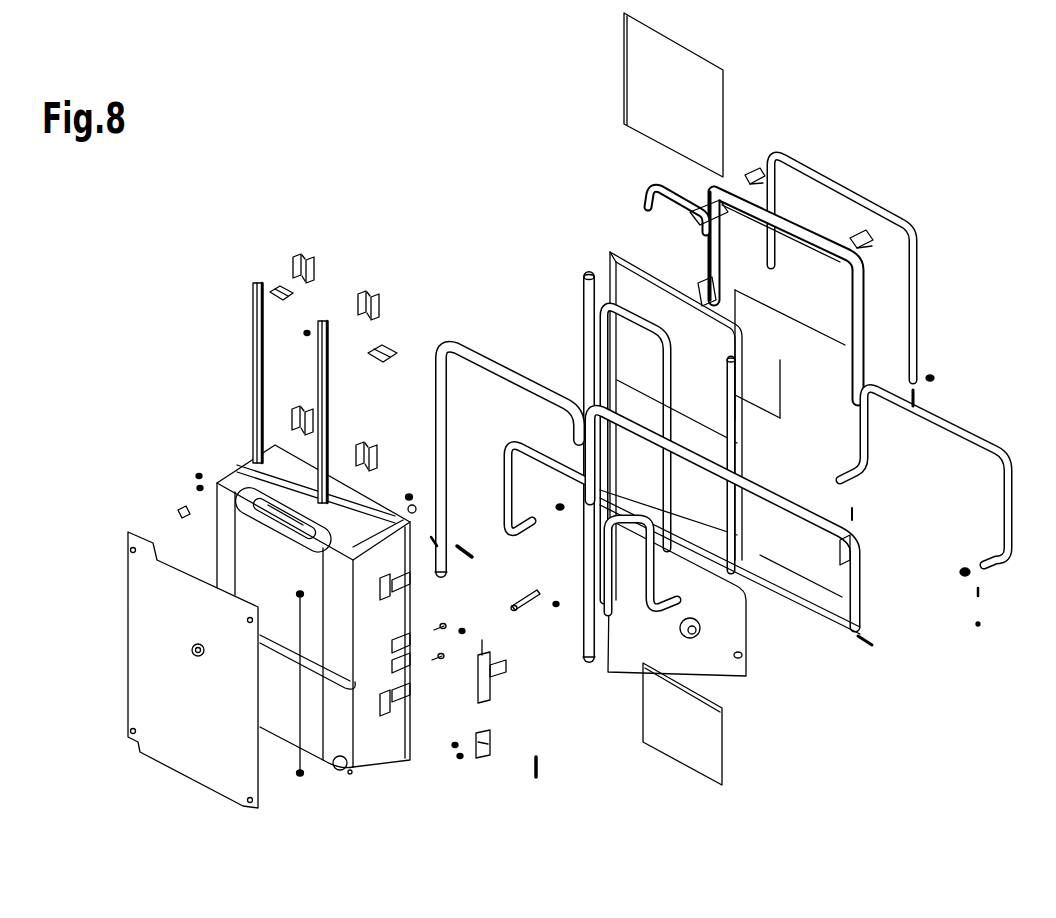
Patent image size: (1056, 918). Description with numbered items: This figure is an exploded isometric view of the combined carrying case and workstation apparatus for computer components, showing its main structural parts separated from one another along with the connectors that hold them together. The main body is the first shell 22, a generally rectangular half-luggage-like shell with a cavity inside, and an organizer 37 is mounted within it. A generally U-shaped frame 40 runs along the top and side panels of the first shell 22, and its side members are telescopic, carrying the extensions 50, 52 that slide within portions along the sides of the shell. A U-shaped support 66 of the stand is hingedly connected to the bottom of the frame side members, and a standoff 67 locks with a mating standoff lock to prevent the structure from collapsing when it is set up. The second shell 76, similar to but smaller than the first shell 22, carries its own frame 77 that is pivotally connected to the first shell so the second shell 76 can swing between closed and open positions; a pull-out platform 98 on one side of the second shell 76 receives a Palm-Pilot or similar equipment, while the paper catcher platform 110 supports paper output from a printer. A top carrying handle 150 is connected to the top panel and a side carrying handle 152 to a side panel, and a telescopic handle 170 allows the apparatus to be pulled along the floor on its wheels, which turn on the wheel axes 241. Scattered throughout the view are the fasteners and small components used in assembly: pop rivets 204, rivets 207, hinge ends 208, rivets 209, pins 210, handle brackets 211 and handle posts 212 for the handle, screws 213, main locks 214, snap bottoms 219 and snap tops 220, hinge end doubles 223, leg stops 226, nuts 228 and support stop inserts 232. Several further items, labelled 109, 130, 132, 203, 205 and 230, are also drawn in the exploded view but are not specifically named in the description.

The first shell 22 is at (334, 622).
The organizer 37 is at (166, 580).
The frame 40 is at (478, 330).
The extension 50 is at (727, 368).
The extension 52 is at (600, 300).
The U-shaped support 66 is at (942, 425).
The standoff 67 is at (977, 624).
The second shell 76 is at (707, 186).
The frame 77 is at (881, 205).
The pull-out platform 98 is at (697, 73).
The fastener 109 is at (977, 592).
The paper catcher platform 110 is at (713, 773).
The outer frame 130 is at (850, 195).
The clip 132 is at (758, 172).
The top carrying handle 150 is at (652, 192).
The side carrying handle 152 is at (702, 290).
The telescopic handle 170 is at (583, 292).
The latch bracket 203 is at (466, 672).
The pop rivets 204 is at (307, 336).
The pin 205 is at (516, 608).
The rivets 207 is at (512, 658).
The hinge ends 208 is at (457, 418).
The rivets 209 is at (922, 442).
The pins 210 is at (410, 494).
The handle brackets 211 is at (335, 340).
The handle posts 212 is at (242, 393).
The screws 213 is at (170, 498).
The main locks 214 is at (404, 522).
The snap bottoms 219 is at (198, 656).
The snap tops 220 is at (298, 770).
The hinge end doubles 223 is at (934, 373).
The leg stops 226 is at (725, 522).
The nuts 228 is at (540, 440).
The pin 230 is at (887, 655).
The support stop inserts 232 is at (540, 499).
The wheel axes 241 is at (740, 656).